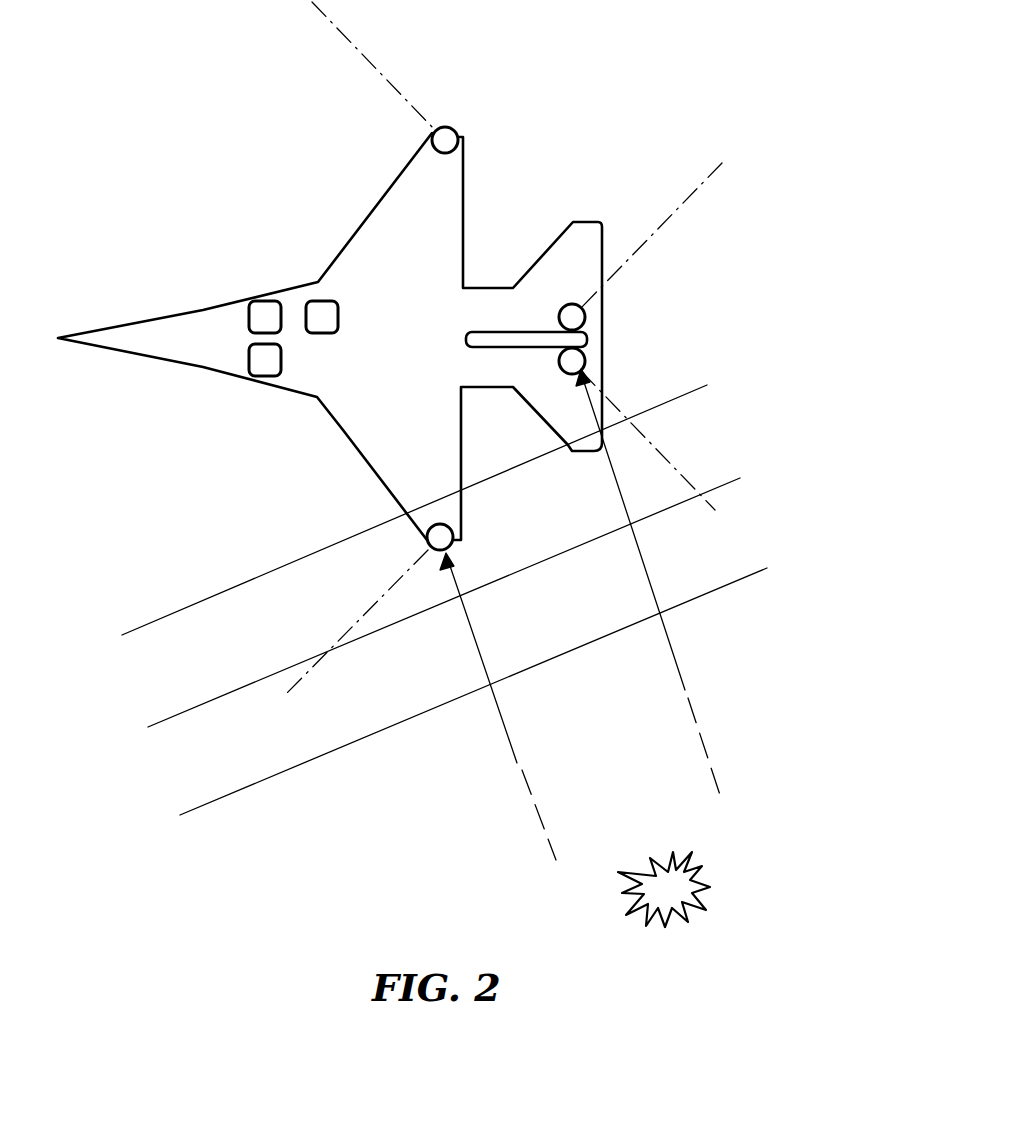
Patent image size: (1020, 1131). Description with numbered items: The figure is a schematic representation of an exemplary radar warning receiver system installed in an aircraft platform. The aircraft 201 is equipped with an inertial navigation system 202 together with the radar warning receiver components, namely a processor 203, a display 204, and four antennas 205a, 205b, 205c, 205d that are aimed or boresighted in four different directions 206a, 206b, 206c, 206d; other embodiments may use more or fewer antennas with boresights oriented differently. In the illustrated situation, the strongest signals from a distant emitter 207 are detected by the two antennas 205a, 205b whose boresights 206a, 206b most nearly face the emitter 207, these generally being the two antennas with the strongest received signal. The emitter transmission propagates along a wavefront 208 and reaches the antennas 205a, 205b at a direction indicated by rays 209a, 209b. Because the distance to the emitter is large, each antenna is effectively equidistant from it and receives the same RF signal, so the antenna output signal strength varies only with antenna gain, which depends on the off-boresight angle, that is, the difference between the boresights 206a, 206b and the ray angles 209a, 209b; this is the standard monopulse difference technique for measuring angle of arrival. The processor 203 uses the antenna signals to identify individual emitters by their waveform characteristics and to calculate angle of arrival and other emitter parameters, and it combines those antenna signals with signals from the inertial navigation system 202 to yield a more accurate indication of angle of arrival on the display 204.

The aircraft 201 is at (465, 222).
The inertial navigation system 202 is at (267, 378).
The processor 203 is at (267, 300).
The display 204 is at (340, 312).
The antenna 205a is at (452, 546).
The antenna 205b is at (587, 370).
The antenna 205c is at (587, 307).
The antenna 205d is at (453, 128).
The boresight direction 206a is at (363, 616).
The boresight direction 206b is at (655, 448).
The boresight direction 206c is at (658, 228).
The boresight direction 206d is at (367, 58).
The distant emitter 207 is at (677, 878).
The wavefront 208 is at (587, 524).
The ray 209a is at (502, 713).
The ray 209b is at (670, 643).